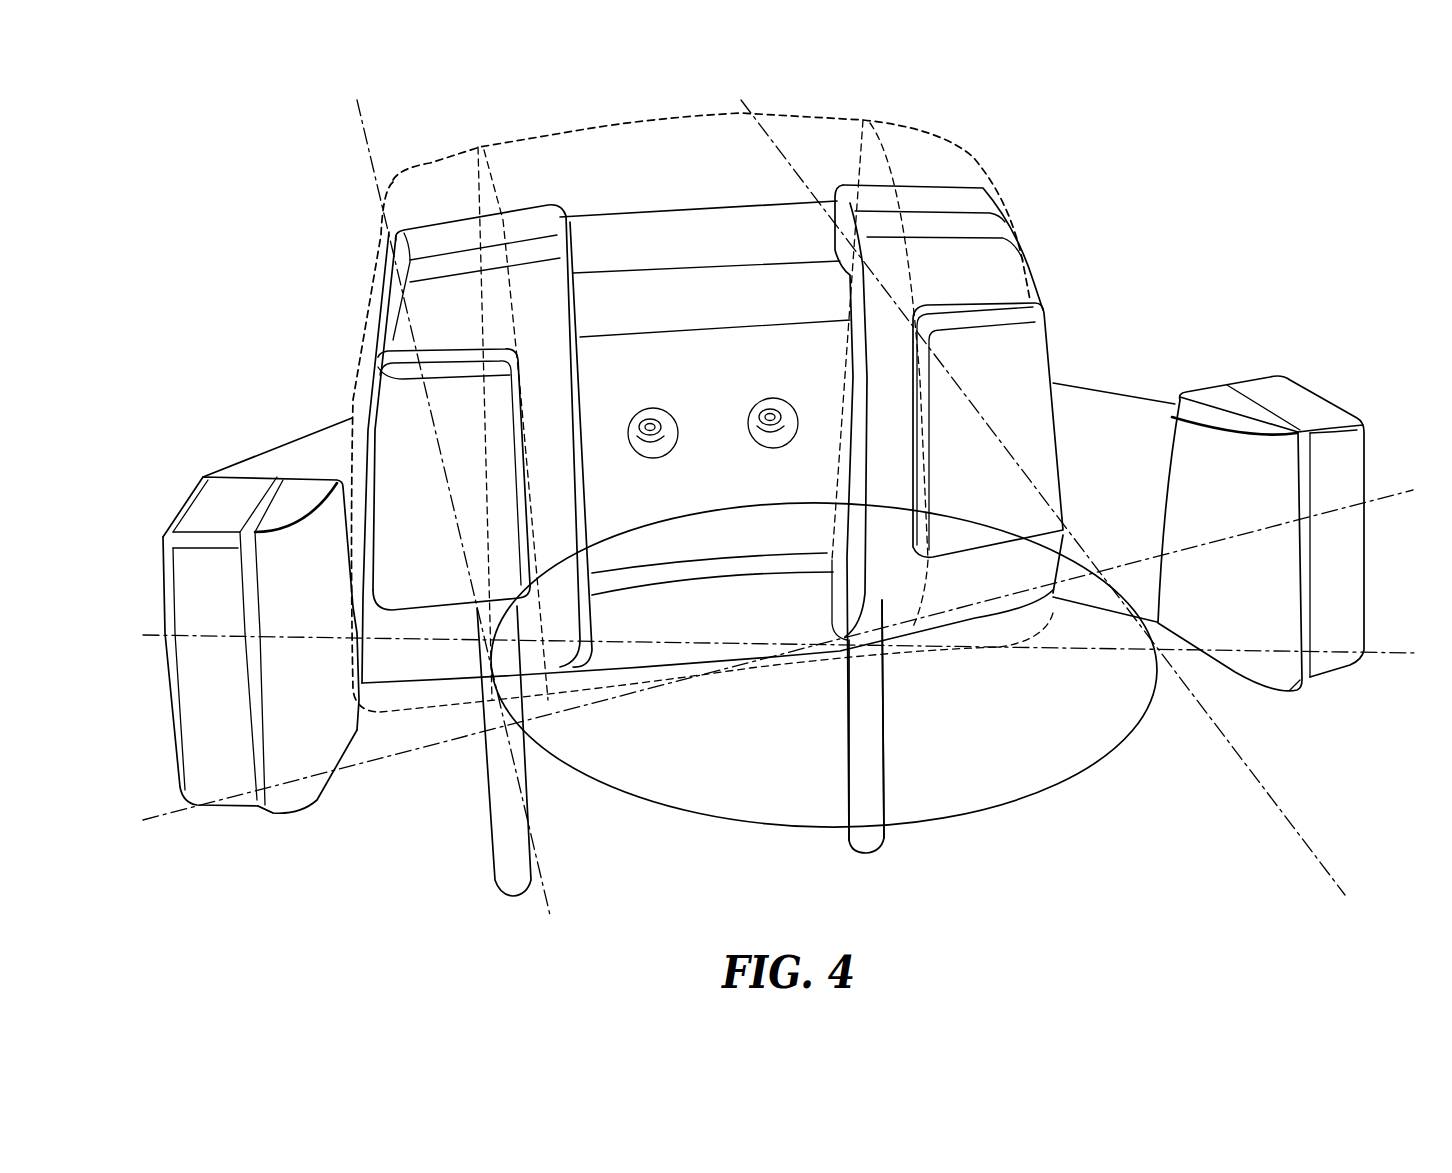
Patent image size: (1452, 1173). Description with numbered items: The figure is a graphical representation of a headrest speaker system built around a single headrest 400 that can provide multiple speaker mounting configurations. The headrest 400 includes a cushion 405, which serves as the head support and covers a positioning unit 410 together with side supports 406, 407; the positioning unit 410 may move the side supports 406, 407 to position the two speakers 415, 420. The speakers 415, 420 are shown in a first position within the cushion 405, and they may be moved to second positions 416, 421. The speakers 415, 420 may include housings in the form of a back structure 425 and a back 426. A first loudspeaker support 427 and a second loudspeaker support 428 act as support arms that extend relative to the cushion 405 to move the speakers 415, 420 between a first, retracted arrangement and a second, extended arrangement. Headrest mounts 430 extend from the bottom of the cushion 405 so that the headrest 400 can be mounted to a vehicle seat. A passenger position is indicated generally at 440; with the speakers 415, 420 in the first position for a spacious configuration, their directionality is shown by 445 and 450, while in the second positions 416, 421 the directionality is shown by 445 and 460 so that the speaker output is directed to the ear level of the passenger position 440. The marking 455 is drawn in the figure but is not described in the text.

The headrest 400 is at (275, 162).
The cushion 405 is at (600, 147).
The side support 406 is at (420, 313).
The side support 407 is at (997, 260).
The positioning unit 410 is at (733, 280).
The speaker 415 is at (383, 413).
The second position 416 is at (152, 455).
The speaker 420 is at (1023, 343).
The second position 421 is at (1220, 356).
The back structure 425 is at (170, 717).
The back 426 is at (1353, 590).
The first loudspeaker support 427 is at (273, 450).
The second loudspeaker support 428 is at (1092, 608).
The headrest mount 430 is at (510, 853).
The passenger position 440 is at (710, 813).
The directionality 445 is at (543, 887).
The directionality 450 is at (1295, 818).
The lower rim (hidden) 455 is at (597, 690).
The directionality 460 is at (987, 630).